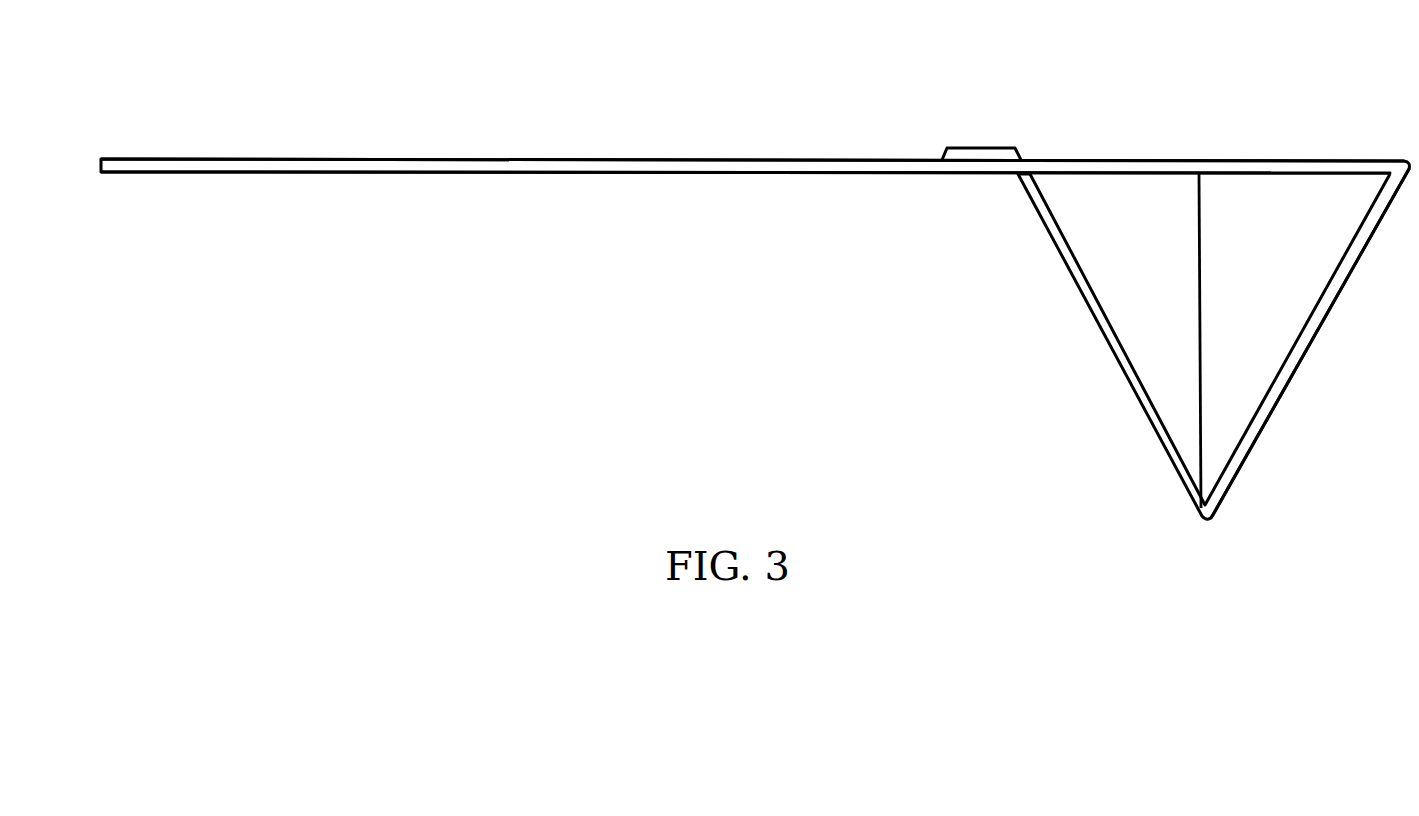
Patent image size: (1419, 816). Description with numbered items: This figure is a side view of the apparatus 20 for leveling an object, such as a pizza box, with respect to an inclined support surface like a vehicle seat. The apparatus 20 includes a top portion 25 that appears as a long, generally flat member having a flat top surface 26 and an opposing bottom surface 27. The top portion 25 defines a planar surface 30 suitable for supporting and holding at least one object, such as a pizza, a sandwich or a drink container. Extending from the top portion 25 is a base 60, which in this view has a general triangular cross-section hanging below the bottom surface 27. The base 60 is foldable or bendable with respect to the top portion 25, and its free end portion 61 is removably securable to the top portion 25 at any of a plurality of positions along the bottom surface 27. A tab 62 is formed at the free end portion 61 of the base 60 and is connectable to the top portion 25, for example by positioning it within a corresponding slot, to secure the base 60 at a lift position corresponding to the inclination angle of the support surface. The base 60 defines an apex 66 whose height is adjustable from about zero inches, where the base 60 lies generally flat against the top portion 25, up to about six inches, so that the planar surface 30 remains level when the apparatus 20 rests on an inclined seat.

The apparatus 20 is at (755, 259).
The top portion 25 is at (755, 295).
The top surface 26 is at (688, 161).
The bottom surface 27 is at (622, 175).
The planar surface 30 is at (1182, 289).
The base 60 is at (1130, 378).
The free end portion 61 is at (1012, 180).
The tab 62 is at (975, 157).
The apex 66 is at (1200, 302).